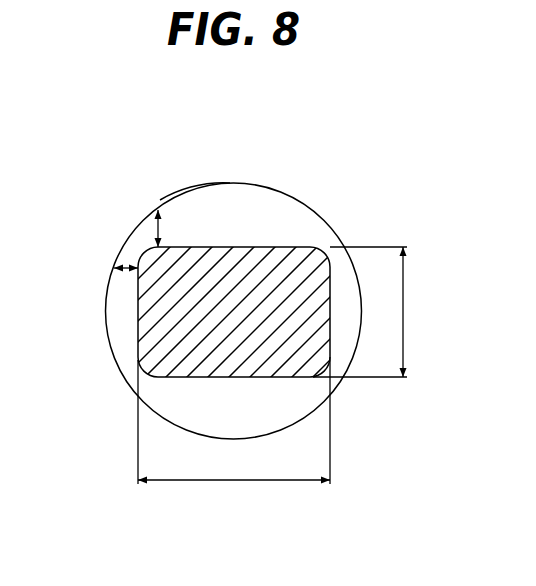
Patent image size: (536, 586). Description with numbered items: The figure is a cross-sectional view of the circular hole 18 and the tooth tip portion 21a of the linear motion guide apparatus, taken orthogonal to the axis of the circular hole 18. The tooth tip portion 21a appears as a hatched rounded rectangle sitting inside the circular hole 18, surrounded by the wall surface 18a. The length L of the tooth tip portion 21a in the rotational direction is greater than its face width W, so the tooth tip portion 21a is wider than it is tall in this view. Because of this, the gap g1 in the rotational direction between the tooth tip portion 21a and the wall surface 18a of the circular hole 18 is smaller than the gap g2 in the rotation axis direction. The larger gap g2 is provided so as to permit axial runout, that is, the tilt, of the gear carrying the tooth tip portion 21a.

The circular hole 18 is at (265, 187).
The wall surface 18a is at (180, 195).
The tooth tip portion 21a is at (278, 262).
The gap in the rotational direction g1 is at (124, 268).
The gap in the rotation axis direction g2 is at (158, 230).
The face width W is at (374, 312).
The length in the rotational direction L is at (234, 420).